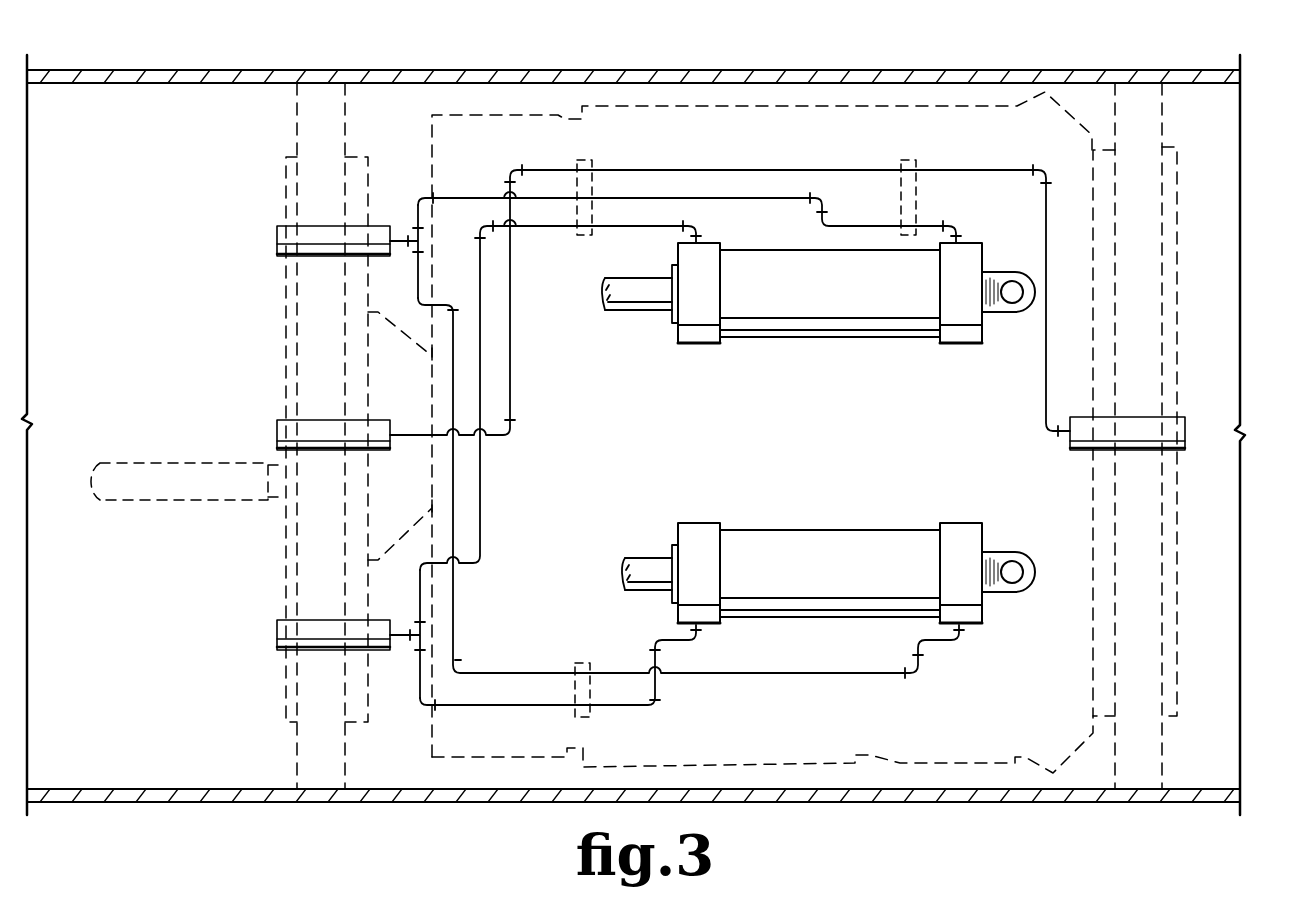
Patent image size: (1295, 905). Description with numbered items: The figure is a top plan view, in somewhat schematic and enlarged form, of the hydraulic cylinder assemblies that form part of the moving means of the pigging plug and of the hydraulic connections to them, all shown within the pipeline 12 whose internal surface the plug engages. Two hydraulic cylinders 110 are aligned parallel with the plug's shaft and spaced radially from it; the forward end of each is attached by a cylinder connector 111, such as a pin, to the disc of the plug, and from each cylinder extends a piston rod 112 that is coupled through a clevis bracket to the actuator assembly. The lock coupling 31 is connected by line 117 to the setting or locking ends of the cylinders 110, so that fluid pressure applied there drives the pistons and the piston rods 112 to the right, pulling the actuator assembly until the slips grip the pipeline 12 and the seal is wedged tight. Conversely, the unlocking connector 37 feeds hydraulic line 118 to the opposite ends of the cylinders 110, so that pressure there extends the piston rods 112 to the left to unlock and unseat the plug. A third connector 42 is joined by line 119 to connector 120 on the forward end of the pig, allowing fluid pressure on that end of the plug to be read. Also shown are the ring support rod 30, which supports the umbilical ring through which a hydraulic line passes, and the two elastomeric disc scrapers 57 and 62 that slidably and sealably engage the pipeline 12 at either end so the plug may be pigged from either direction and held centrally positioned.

The pipeline 12 is at (725, 70).
The unlocking connector 37 is at (277, 241).
The connector 42 is at (277, 435).
The lock coupling 31 is at (277, 640).
The ring support rod 30 is at (243, 483).
The annular disc scraper 57 is at (318, 733).
The annular elastomeric disc scraper 62 is at (1150, 667).
The line 119 is at (745, 166).
The hydraulic line 118 is at (453, 400).
The line 117 is at (482, 520).
The piston rod 112 is at (650, 315).
The hydraulic cylinders 110 is at (830, 323).
The cylinder connectors 111 is at (1018, 318).
The connector 120 is at (1175, 418).